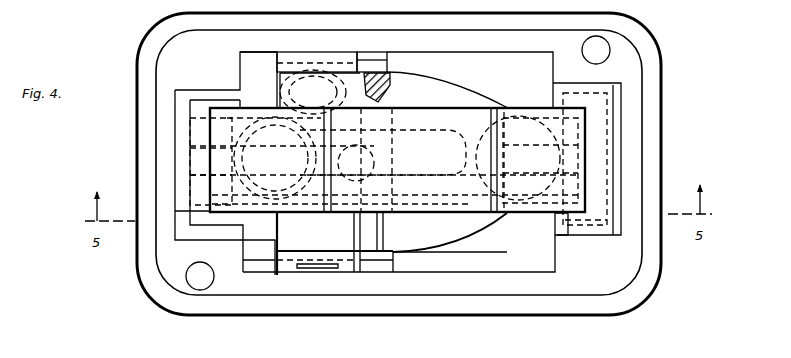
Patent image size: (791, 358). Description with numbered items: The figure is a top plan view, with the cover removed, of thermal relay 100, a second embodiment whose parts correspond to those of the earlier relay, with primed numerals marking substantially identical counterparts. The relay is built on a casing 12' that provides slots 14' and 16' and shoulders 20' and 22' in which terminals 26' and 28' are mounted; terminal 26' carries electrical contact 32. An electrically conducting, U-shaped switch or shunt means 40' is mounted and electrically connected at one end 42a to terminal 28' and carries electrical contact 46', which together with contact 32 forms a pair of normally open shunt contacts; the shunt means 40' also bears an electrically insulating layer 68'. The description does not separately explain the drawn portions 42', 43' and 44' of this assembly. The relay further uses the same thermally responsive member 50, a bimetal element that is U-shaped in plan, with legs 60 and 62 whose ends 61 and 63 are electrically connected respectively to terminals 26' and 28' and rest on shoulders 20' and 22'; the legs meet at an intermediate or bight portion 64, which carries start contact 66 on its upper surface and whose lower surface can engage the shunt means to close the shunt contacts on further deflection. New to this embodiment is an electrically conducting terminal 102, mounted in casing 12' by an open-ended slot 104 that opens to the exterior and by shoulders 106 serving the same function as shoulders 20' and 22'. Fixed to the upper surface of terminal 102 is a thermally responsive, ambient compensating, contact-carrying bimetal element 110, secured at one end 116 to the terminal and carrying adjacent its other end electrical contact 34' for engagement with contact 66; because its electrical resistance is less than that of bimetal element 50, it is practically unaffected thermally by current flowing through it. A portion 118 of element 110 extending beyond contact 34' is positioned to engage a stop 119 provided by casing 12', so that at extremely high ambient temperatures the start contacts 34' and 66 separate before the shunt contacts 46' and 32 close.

The thermal relay 100 is at (677, 83).
The terminal 102 is at (618, 167).
The open-ended slot 104 is at (608, 150).
The shoulders 106 is at (553, 93).
The ambient compensating contact-carrying element 110 is at (447, 106).
The end of bimetal element 116 is at (573, 133).
The portion of bimetal element 118 is at (248, 118).
The stop 119 is at (197, 163).
The casing 12' is at (420, 164).
The slot 14' is at (317, 51).
The slot 16' is at (302, 295).
The shoulder 20' is at (239, 74).
The shoulder 22' is at (239, 257).
The terminal 26' is at (363, 51).
The terminal 28' is at (350, 306).
The electrical contact 32 is at (320, 92).
The electrical contact 34' is at (387, 160).
The shunt means 40' is at (399, 242).
The carriage wall 42' is at (458, 255).
The end of shunt means 42a is at (239, 288).
The slot 43' is at (399, 234).
The carriage wall 44' is at (470, 80).
The electrical contact 46' is at (313, 92).
The thermally responsive member 50 is at (531, 104).
The leg 60 is at (568, 87).
The end of leg 61 is at (383, 152).
The leg 62 is at (567, 235).
The end of leg 63 is at (356, 163).
The intermediate portion 64 is at (314, 212).
The start contact 66 is at (335, 243).
The electrically insulating layer 68' is at (394, 78).